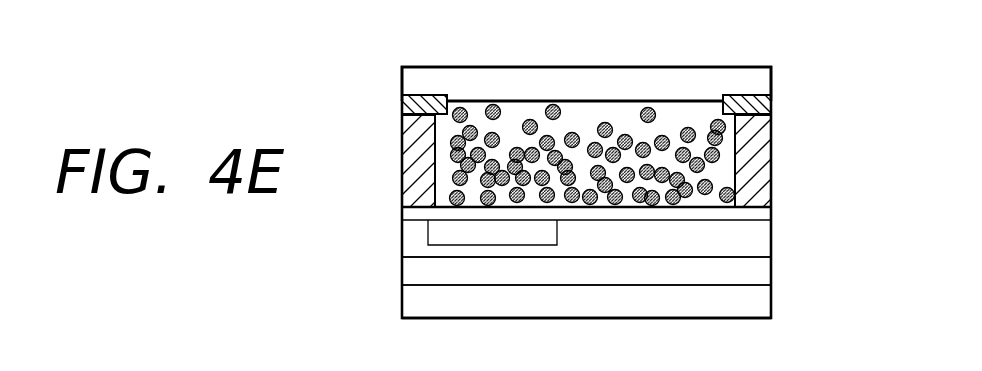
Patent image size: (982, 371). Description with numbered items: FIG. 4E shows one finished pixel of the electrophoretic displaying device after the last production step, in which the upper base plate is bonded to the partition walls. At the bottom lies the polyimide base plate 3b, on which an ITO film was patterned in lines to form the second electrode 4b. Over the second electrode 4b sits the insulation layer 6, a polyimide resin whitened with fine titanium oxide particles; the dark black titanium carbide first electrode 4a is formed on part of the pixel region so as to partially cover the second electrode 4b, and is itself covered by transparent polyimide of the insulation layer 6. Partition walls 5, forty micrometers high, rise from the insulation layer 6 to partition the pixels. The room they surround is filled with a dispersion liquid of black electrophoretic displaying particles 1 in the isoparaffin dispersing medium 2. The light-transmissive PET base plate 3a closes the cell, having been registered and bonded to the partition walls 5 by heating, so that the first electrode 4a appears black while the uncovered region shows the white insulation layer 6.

The electrophoretic displaying particles 1 is at (688, 128).
The dispersing medium 2 is at (632, 108).
The base plate 3a is at (771, 80).
The base plate 3b is at (768, 298).
The first electrode 4a is at (437, 233).
The second electrode 4b is at (768, 270).
The partition walls 5 is at (420, 148).
The insulation layer 6 is at (768, 232).